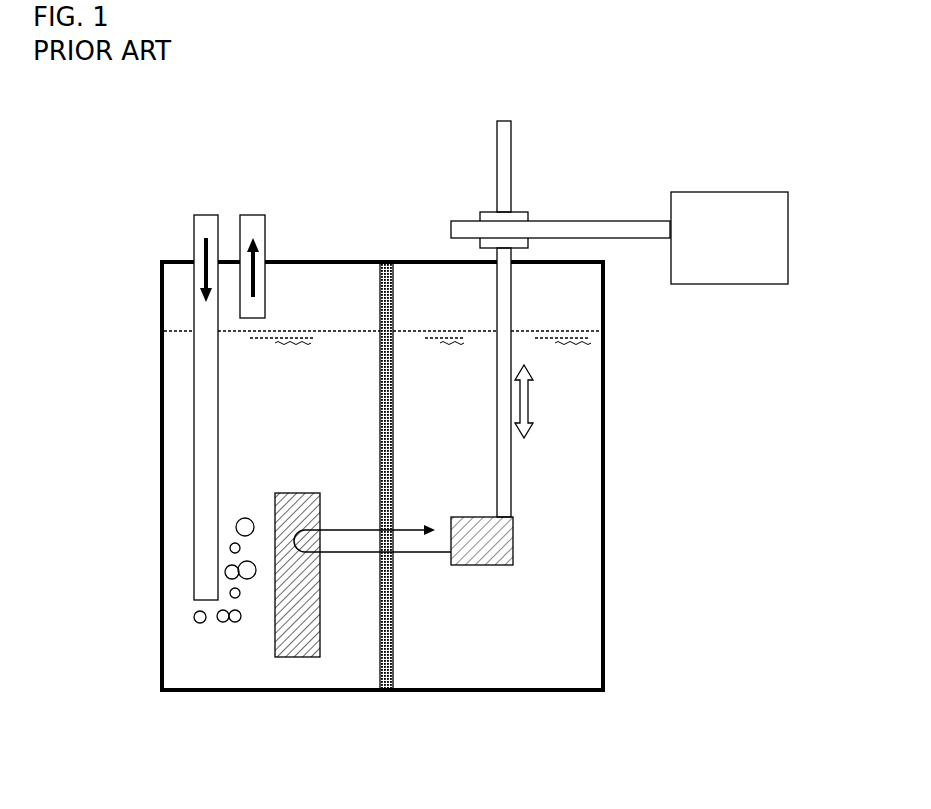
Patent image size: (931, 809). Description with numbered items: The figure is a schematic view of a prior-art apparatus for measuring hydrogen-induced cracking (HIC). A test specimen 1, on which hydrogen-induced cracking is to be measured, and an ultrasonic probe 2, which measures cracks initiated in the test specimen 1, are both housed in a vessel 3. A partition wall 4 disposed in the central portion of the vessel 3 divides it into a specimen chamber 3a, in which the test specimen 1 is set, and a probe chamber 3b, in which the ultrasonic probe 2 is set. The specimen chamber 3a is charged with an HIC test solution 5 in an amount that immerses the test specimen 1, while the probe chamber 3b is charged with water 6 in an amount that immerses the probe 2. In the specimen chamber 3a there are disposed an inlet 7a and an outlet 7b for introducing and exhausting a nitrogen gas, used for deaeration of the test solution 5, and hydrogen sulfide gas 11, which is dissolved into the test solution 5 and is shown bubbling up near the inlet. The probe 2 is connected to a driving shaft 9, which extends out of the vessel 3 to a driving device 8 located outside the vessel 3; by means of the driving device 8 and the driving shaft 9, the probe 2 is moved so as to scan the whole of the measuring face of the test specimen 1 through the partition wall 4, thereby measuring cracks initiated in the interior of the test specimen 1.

The test specimen 1 is at (303, 493).
The ultrasonic probe 2 is at (513, 545).
The vessel 3 is at (605, 452).
The specimen chamber 3a is at (272, 695).
The probe chamber 3b is at (485, 695).
The partition wall 4 is at (388, 260).
The HIC test solution 5 is at (295, 414).
The water 6 is at (453, 414).
The inlet 7a is at (208, 222).
The outlet 7b is at (253, 222).
The driving device 8 is at (737, 216).
The driving shaft 9 is at (511, 163).
The hydrogen sulfide gas 11 is at (192, 610).